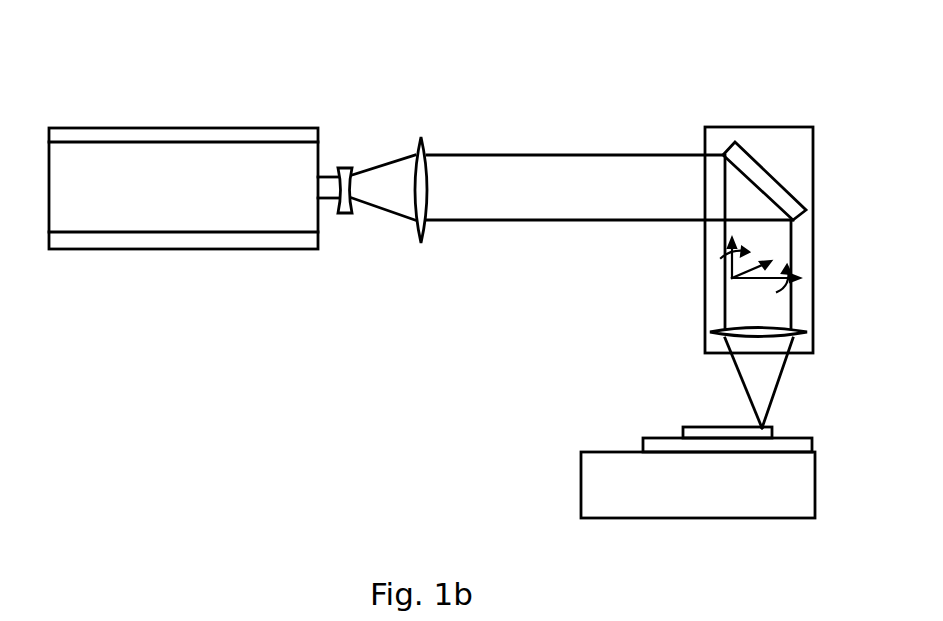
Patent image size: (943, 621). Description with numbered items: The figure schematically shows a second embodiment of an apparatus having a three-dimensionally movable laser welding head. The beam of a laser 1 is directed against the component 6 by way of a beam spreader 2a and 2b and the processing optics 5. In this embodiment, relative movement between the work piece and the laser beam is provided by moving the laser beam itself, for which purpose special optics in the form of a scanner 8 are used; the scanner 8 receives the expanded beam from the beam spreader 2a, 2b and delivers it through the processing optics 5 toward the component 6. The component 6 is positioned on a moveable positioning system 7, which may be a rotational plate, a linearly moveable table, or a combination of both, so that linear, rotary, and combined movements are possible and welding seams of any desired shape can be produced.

The laser 1 is at (183, 120).
The beam spreader 2a is at (344, 155).
The beam spreader 2b is at (420, 118).
The scanner 8 is at (765, 100).
The processing optics 5 is at (695, 332).
The component 6 is at (668, 435).
The positioning system 7 is at (555, 483).